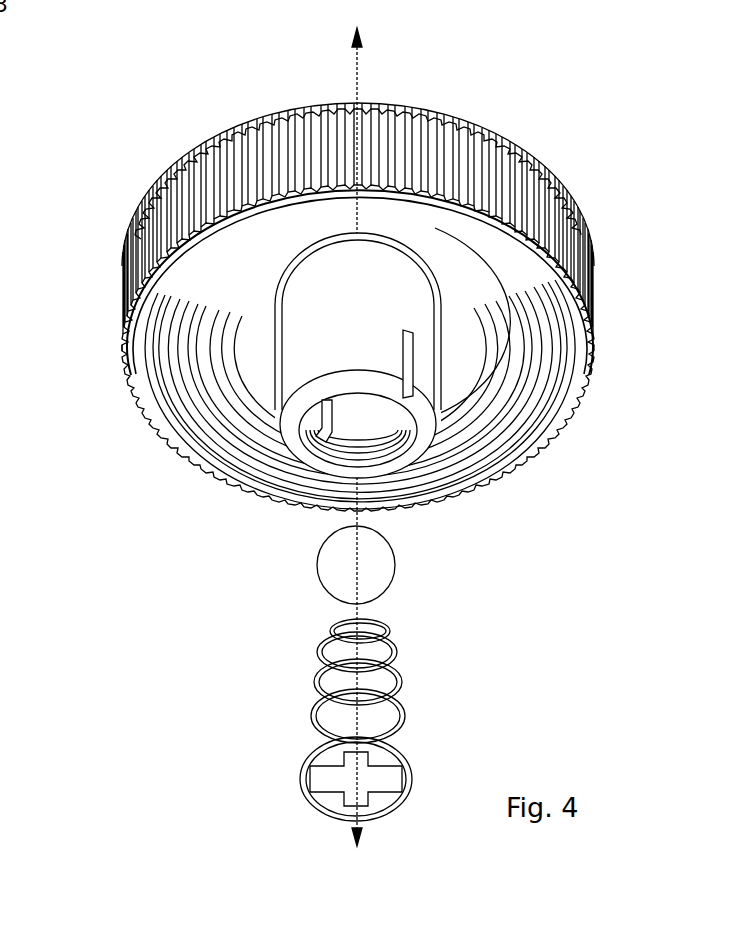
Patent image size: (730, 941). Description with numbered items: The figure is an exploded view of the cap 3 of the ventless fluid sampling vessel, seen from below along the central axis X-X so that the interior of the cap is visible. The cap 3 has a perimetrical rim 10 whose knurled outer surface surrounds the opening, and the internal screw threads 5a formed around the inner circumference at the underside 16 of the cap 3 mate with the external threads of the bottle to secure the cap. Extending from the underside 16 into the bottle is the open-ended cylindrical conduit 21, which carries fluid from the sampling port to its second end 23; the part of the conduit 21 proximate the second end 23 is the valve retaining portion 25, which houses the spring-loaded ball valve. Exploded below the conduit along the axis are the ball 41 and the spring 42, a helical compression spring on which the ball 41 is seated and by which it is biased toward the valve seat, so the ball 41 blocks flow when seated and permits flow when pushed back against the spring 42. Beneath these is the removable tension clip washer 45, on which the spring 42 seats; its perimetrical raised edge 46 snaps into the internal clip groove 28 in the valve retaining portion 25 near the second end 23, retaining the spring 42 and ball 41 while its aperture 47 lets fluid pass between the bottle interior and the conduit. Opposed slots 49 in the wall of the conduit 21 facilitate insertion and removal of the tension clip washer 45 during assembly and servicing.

The cap 3 is at (456, 50).
The perimetrical rim 10 is at (137, 322).
The underside 16 is at (266, 227).
The open-ended cylindrical conduit 21 is at (229, 337).
The valve retaining portion 25 is at (307, 340).
The internal screw threads 5a is at (203, 410).
The opposed slots 49 is at (318, 455).
The second end 23 is at (392, 458).
The internal clip groove 28 is at (405, 466).
The ball 41 is at (330, 560).
The spring 42 is at (307, 665).
The removable tension clip washer 45 is at (344, 792).
The perimetrical raised edge 46 is at (307, 752).
The aperture 47 is at (343, 780).